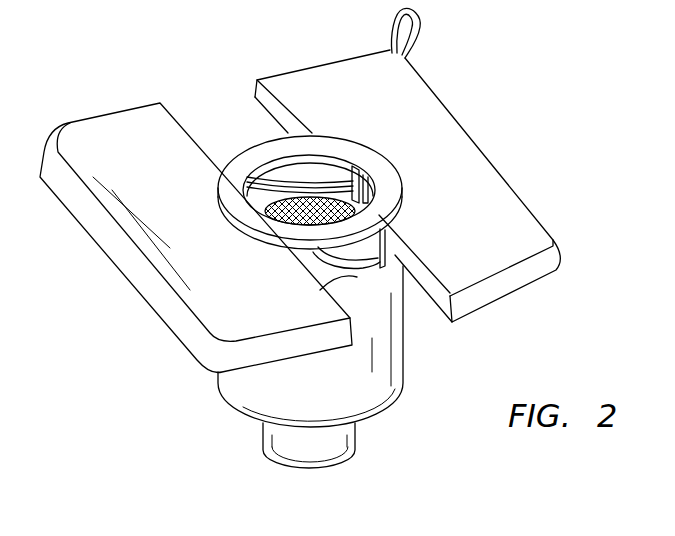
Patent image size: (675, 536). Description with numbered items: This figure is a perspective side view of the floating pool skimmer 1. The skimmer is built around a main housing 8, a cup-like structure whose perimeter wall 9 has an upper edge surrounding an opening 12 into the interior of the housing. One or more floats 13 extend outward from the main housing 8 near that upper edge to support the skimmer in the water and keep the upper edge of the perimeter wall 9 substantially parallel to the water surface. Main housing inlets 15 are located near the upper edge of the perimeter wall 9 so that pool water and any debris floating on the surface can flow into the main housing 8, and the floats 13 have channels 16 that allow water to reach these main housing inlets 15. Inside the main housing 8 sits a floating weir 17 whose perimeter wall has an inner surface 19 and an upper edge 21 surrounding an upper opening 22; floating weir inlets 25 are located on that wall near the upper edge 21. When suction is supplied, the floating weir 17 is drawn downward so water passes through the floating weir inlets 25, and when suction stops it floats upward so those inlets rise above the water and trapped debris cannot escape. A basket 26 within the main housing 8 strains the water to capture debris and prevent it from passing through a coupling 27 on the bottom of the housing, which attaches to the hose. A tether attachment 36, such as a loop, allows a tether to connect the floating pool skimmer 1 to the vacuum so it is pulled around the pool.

The floating pool skimmer 1 is at (495, 115).
The main housing 8 is at (248, 387).
The perimeter wall 9 is at (404, 355).
The opening 12 is at (343, 256).
The floats 13 is at (133, 162).
The main housing inlets 15 is at (290, 177).
The channels 16 is at (213, 88).
The floating weir 17 is at (230, 192).
The inner surface 19 is at (358, 182).
The upper edge 21 is at (373, 148).
The upper opening 22 is at (266, 158).
The floating weir inlets 25 is at (307, 167).
The basket 26 is at (278, 208).
The coupling 27 is at (267, 453).
The tether attachment 36 is at (421, 30).